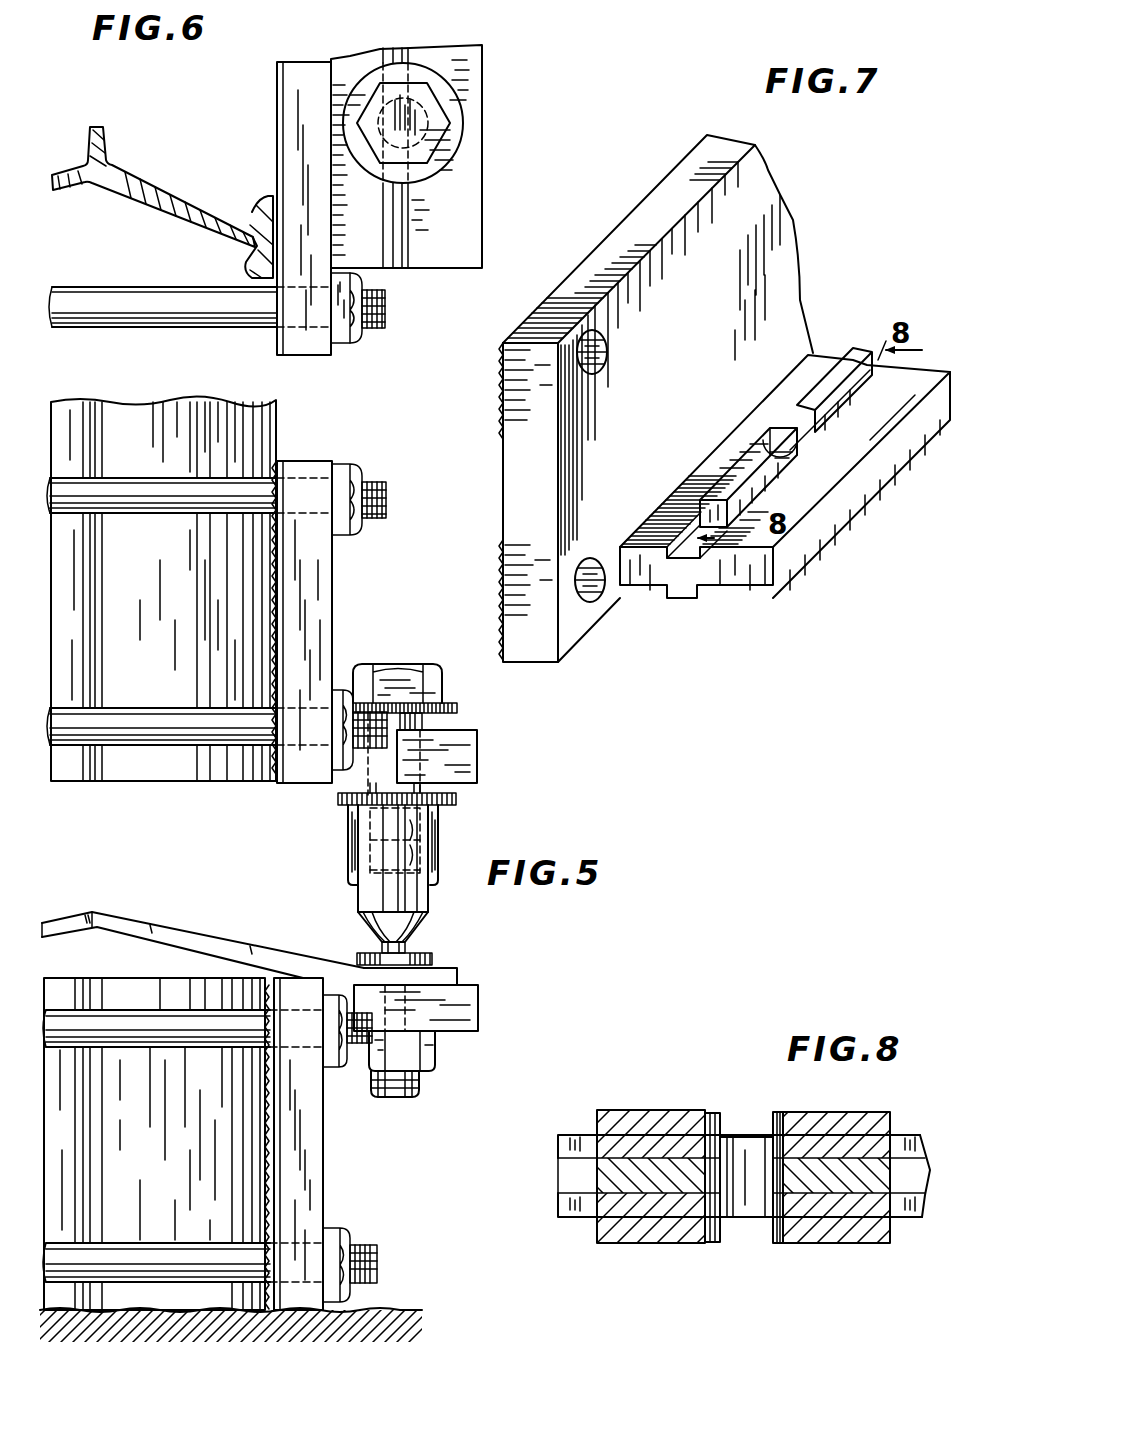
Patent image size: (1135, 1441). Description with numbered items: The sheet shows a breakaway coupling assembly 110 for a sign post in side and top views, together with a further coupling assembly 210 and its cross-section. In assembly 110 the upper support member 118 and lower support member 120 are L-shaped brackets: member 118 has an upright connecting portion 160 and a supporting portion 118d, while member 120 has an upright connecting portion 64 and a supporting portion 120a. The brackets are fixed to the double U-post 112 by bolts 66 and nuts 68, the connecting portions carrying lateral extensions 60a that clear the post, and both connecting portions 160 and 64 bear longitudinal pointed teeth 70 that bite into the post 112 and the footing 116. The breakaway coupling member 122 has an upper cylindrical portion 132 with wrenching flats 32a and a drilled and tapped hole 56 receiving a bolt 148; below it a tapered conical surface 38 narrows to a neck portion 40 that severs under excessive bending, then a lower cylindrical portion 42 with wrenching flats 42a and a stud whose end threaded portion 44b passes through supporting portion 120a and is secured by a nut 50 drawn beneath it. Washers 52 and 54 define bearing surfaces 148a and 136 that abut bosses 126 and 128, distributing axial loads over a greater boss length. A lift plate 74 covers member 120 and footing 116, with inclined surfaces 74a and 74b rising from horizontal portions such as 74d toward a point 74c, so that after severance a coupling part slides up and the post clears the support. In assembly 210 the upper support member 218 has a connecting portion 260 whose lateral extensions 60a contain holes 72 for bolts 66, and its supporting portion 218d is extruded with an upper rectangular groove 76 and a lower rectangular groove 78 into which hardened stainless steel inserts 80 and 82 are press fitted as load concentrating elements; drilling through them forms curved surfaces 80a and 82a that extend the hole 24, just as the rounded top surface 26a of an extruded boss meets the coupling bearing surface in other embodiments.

In FIG. 7, the hole 24 is at (715, 422).
In FIG. 8, the hole 24 is at (745, 1218).
In FIG. 7, the rounded top surface 26a is at (750, 452).
In FIG. 5, the wrenching flats 32a is at (358, 900).
In FIG. 5, the tapered conical surface 38 is at (366, 930).
In FIG. 5, the neck portion 40 is at (408, 949).
In FIG. 5, the lower cylindrical portion 42 is at (356, 958).
In FIG. 5, the wrenching flats 42a is at (440, 960).
In FIG. 5, the end threaded portion 44b is at (420, 1088).
In FIG. 5, the nut 50 is at (438, 1055).
In FIG. 6, the washer 52 is at (462, 148).
In FIG. 5, the washer 52 is at (459, 708).
In FIG. 5, the washer 54 is at (342, 806).
In FIG. 5, the drilled and tapped hole 56 is at (436, 851).
In FIG. 6, the lateral extensions 60a is at (310, 346).
In FIG. 7, the lateral extensions 60a is at (545, 325).
In FIG. 5, the upright connecting portion 64 is at (326, 1181).
In FIG. 6, the bolts 66 is at (223, 318).
In FIG. 5, the bolts 66 is at (170, 516).
In FIG. 6, the nuts 68 is at (353, 340).
In FIG. 5, the nuts 68 is at (349, 468).
In FIG. 6, the pointed teeth 70 is at (268, 200).
In FIG. 7, the pointed teeth 70 is at (500, 400).
In FIG. 5, the pointed teeth 70 is at (282, 463).
In FIG. 7, the holes 72 is at (608, 352).
In FIG. 5, the lift plate 74 is at (128, 883).
In FIG. 5, the inclined surface 74a is at (138, 923).
In FIG. 5, the inclined surface 74b is at (58, 933).
In FIG. 5, the point 74c is at (88, 913).
In FIG. 5, the horizontal portion 74d is at (460, 979).
In FIG. 7, the upper rectangular groove 76 is at (668, 548).
In FIG. 8, the upper rectangular groove 76 is at (560, 1147).
In FIG. 7, the lower rectangular groove 78 is at (684, 600).
In FIG. 8, the lower rectangular groove 78 is at (562, 1204).
In FIG. 7, the insert 80 is at (838, 398).
In FIG. 8, the insert 80 is at (658, 1110).
In FIG. 7, the curved surface 80a is at (808, 434).
In FIG. 8, the curved surface 80a is at (720, 1127).
In FIG. 8, the insert 82 is at (650, 1244).
In FIG. 8, the curved surface 82a is at (780, 1244).
In FIG. 6, the coupling assembly 110 is at (503, 76).
In FIG. 5, the coupling assembly 110 is at (552, 830).
In FIG. 6, the post 112 is at (174, 220).
In FIG. 5, the post 112 is at (272, 410).
In FIG. 5, the footing 116 is at (90, 1162).
In FIG. 5, the upper support member 118 is at (380, 572).
In FIG. 6, the supporting portion 118d is at (478, 213).
In FIG. 5, the supporting portion 118d is at (480, 764).
In FIG. 5, the lower support member 120 is at (502, 1074).
In FIG. 5, the supporting portion 120a is at (478, 1026).
In FIG. 5, the breakaway coupling member 122 is at (346, 912).
In FIG. 6, the boss 126 is at (400, 246).
In FIG. 5, the boss 126 is at (430, 698).
In FIG. 5, the boss 128 is at (428, 813).
In FIG. 5, the upper cylindrical portion 132 is at (443, 879).
In FIG. 5, the bearing surface 136 is at (366, 791).
In FIG. 6, the bolt 148 is at (455, 124).
In FIG. 5, the bolt 148 is at (406, 665).
In FIG. 5, the bearing surface 148a is at (424, 722).
In FIG. 6, the upright connecting portion 160 is at (318, 47).
In FIG. 5, the upright connecting portion 160 is at (334, 604).
In FIG. 7, the coupling assembly 210 is at (797, 195).
In FIG. 7, the upper support member 218 is at (840, 316).
In FIG. 7, the supporting portion 218d is at (805, 553).
In FIG. 8, the supporting portion 218d is at (931, 1150).
In FIG. 7, the connecting portion 260 is at (790, 270).